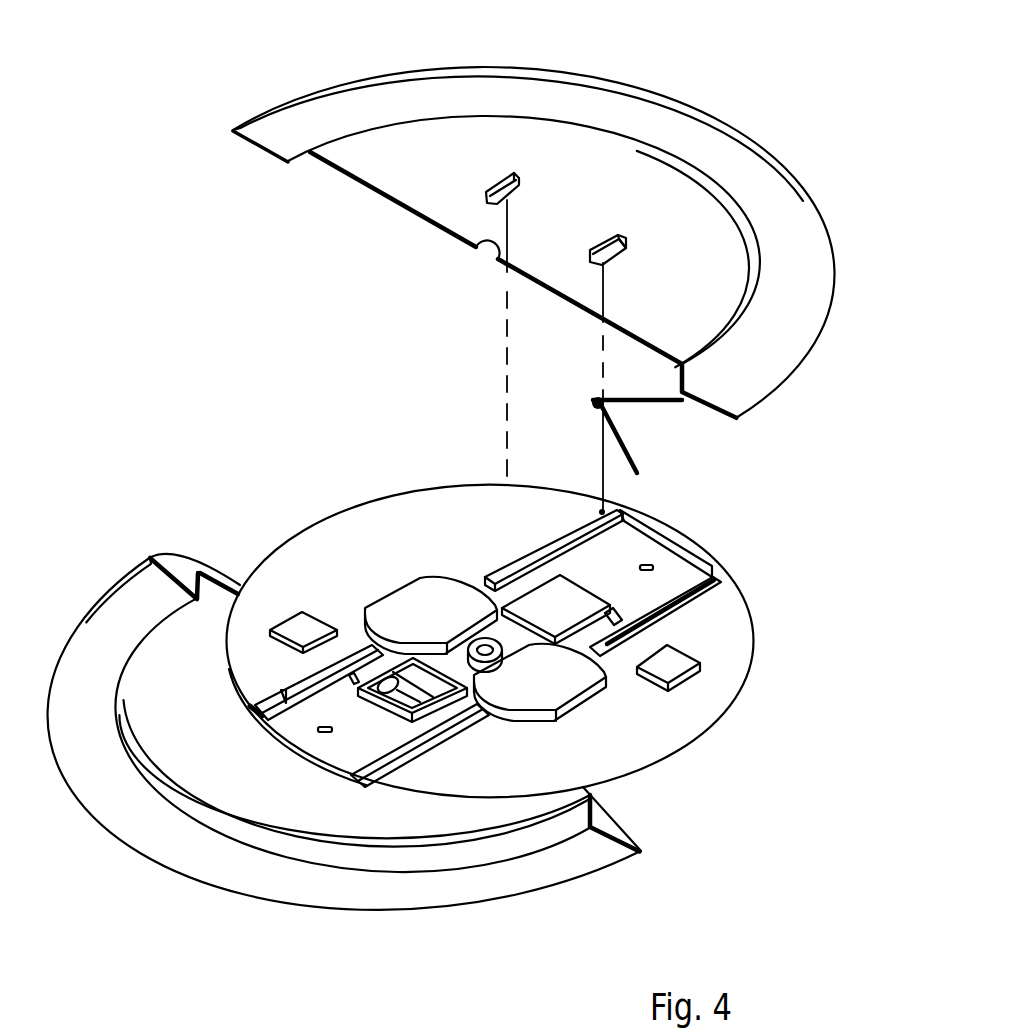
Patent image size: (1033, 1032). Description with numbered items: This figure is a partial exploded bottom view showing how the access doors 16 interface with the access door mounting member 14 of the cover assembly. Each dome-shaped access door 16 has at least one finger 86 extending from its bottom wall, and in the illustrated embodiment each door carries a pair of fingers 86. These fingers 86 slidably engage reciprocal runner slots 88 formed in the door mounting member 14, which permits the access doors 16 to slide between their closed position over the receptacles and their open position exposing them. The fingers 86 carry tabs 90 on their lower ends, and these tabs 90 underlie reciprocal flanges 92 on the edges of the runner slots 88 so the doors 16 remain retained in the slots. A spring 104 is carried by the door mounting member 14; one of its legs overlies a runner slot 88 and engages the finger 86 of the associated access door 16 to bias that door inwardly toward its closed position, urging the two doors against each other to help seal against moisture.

The access door mounting member 14 is at (536, 641).
The access door 16 is at (688, 115).
The finger 86 is at (487, 197).
The runner slot 88 is at (585, 540).
The tab 90 is at (625, 247).
The flange 92 is at (717, 577).
The spring 104 is at (637, 468).